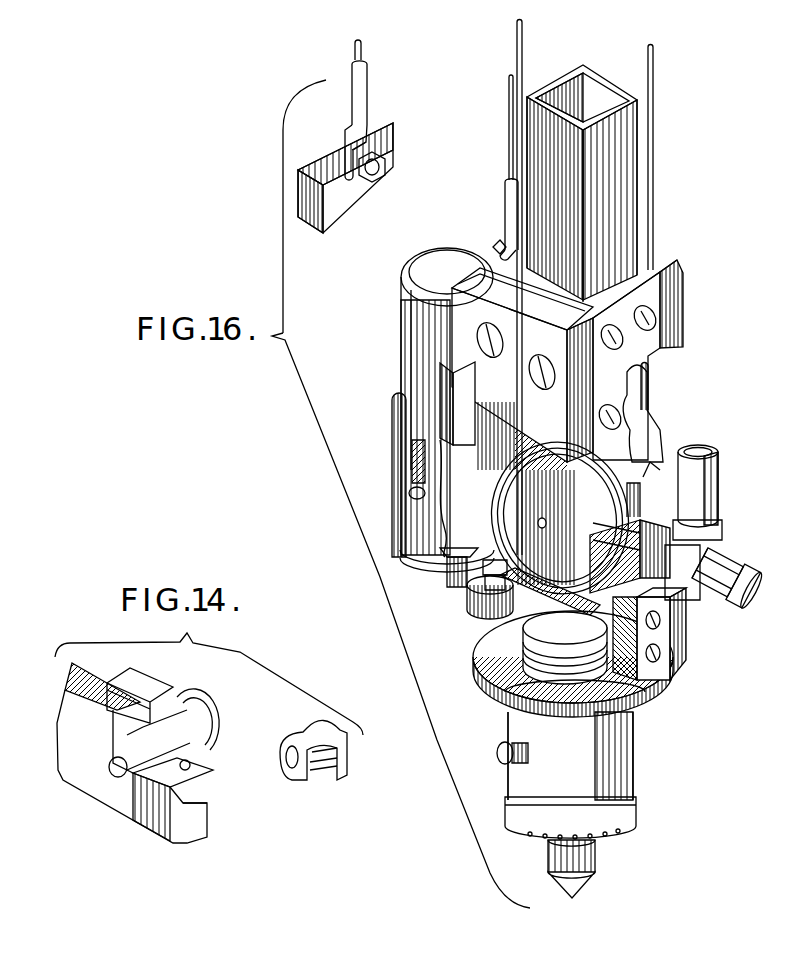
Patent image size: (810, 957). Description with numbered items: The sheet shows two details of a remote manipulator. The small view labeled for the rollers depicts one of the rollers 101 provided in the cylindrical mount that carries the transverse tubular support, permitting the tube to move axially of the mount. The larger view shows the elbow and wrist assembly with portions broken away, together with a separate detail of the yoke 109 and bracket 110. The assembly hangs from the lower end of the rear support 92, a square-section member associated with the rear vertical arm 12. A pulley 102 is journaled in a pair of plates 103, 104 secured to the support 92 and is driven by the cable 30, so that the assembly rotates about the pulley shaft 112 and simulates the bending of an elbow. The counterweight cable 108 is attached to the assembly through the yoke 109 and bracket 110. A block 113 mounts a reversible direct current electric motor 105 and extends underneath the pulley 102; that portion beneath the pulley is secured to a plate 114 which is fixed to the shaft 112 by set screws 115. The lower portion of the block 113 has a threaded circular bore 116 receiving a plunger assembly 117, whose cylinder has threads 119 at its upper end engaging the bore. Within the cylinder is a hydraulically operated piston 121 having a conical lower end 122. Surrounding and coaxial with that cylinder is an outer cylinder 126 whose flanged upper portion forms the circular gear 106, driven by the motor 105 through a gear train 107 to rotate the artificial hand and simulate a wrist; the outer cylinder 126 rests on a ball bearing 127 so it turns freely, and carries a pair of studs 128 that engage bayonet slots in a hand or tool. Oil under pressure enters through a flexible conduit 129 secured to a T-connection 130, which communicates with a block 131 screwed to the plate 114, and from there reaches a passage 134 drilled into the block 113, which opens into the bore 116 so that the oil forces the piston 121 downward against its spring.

In FIG. 16, the rear vertical arm 12 is at (657, 193).
In FIG. 16, the cable 30 is at (523, 47).
In FIG. 16, the rear support 92 is at (628, 137).
In FIG. 14, the rollers 101 is at (232, 742).
In FIG. 16, the pulley 102 is at (643, 425).
In FIG. 16, the plate 103 is at (646, 340).
In FIG. 16, the plate 104 is at (493, 247).
In FIG. 16, the reversible direct current electric motor 105 is at (412, 318).
In FIG. 16, the circular gear 106 is at (480, 657).
In FIG. 16, the gear train 107 is at (452, 595).
In FIG. 16, the cable 108 is at (509, 143).
In FIG. 16, the yoke 109 is at (366, 127).
In FIG. 16, the bracket 110 is at (340, 200).
In FIG. 16, the shaft 112 is at (668, 536).
In FIG. 16, the block 113 is at (412, 558).
In FIG. 16, the plate 114 is at (603, 563).
In FIG. 16, the set screws 115 is at (610, 470).
In FIG. 16, the circular bore 116 is at (520, 618).
In FIG. 16, the plunger assembly 117 is at (503, 713).
In FIG. 16, the threads 119 is at (520, 663).
In FIG. 16, the piston 121 is at (600, 851).
In FIG. 16, the conical lower end 122 is at (586, 879).
In FIG. 16, the outer cylinder 126 is at (628, 763).
In FIG. 16, the ball bearing 127 is at (634, 805).
In FIG. 16, the studs 128 is at (504, 757).
In FIG. 16, the flexible conduit 129 is at (722, 468).
In FIG. 16, the T-connection 130 is at (714, 552).
In FIG. 16, the block 131 is at (672, 592).
In FIG. 16, the passage 134 is at (523, 613).